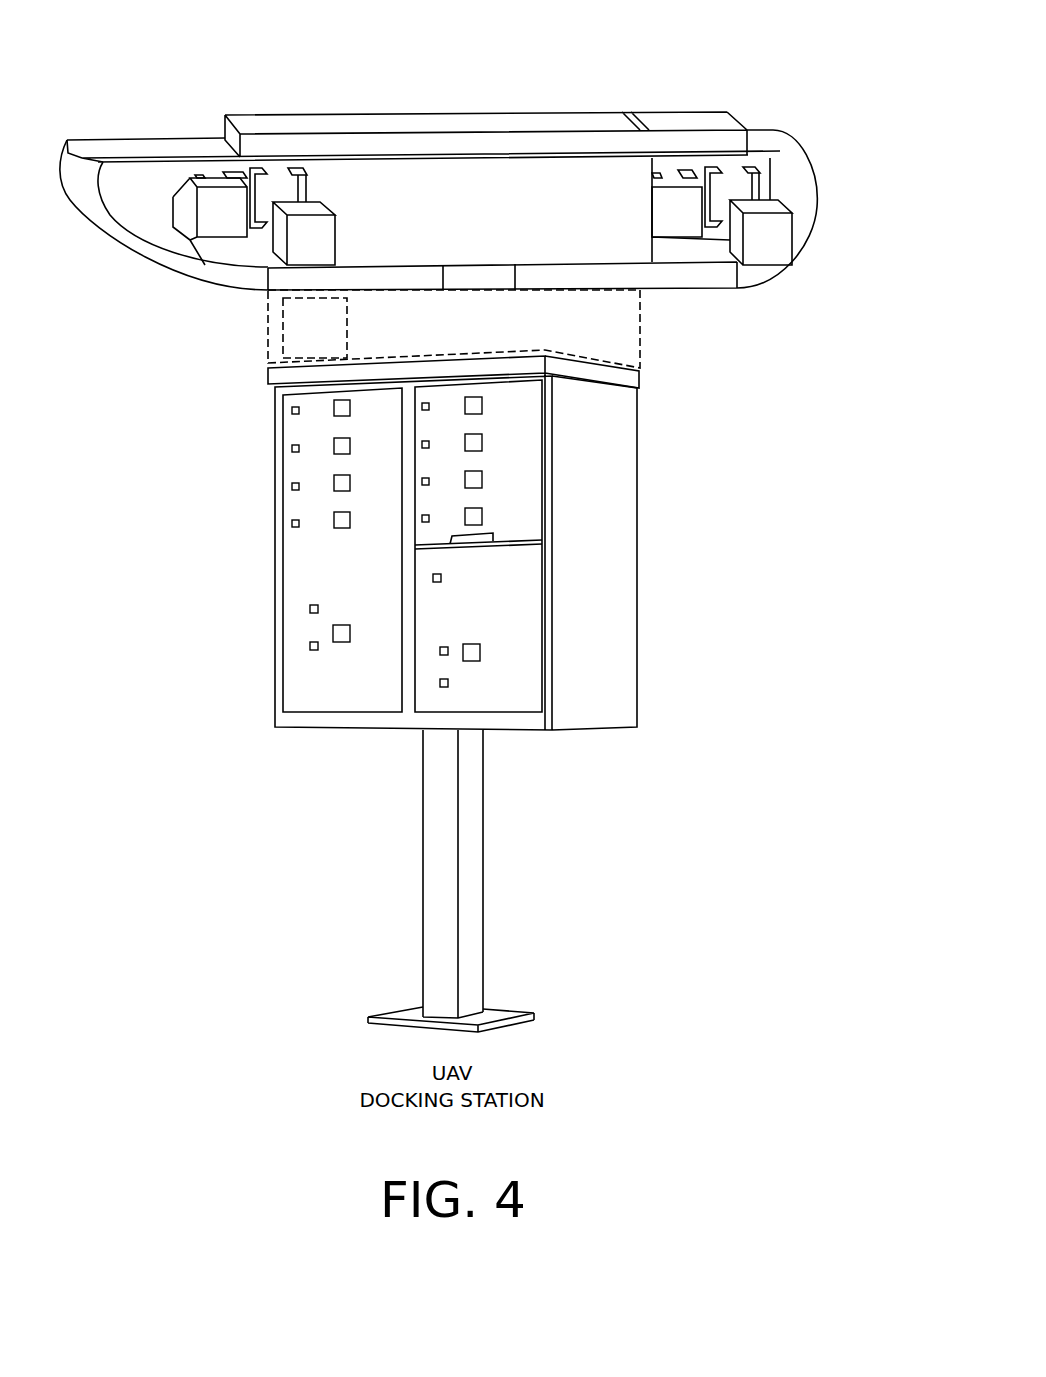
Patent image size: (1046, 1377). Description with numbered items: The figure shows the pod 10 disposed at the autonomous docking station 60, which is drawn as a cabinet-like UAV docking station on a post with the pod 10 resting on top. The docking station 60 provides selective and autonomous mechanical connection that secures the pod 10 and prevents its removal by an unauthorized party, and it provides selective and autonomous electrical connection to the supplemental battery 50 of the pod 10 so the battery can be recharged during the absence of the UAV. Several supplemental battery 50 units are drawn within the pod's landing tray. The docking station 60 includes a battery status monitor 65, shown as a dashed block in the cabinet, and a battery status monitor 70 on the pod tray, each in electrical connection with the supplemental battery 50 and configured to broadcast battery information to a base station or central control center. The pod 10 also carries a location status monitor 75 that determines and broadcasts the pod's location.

The pod 10 is at (830, 145).
The supplemental battery 50 is at (280, 237).
The autonomous docking station 60 is at (265, 340).
The battery status monitor 65 is at (303, 338).
The battery status monitor 70 is at (753, 167).
The location status monitor 75 is at (478, 278).